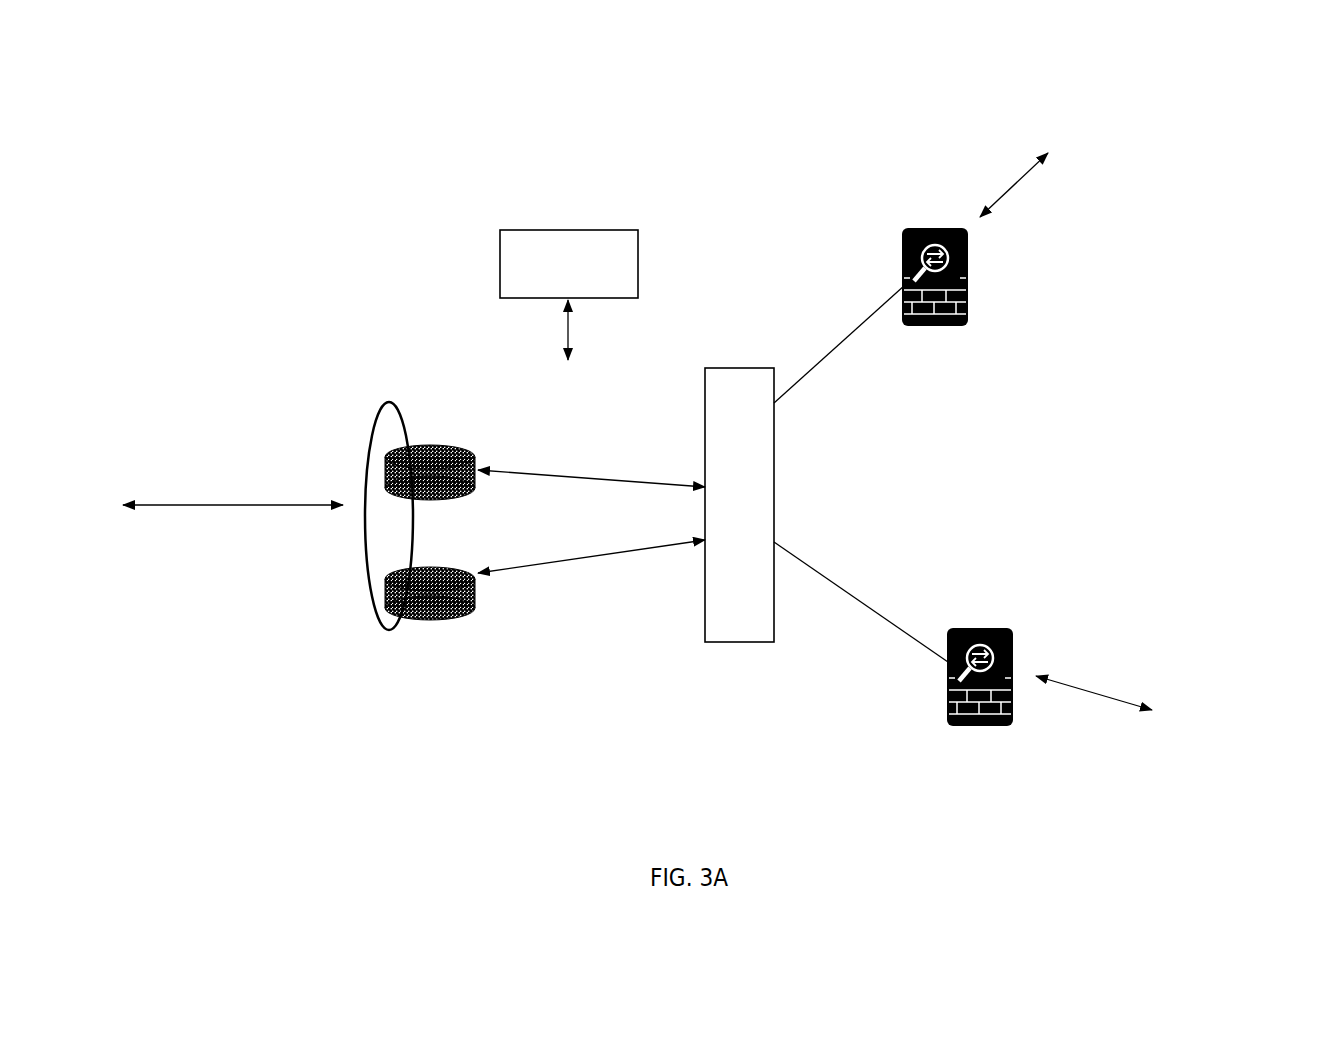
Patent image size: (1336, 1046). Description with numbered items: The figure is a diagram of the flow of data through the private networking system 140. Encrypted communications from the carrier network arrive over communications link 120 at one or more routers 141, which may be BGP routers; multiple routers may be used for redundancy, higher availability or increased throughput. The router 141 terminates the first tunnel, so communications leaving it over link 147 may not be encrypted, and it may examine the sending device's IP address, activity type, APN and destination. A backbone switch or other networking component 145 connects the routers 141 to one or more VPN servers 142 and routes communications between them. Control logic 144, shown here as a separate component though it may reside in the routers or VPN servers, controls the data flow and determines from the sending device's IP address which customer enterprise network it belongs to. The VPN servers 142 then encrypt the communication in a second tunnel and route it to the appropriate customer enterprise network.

The communications link 120 is at (260, 505).
The private networking system 140 is at (388, 178).
The routers 141 is at (465, 620).
The VPN servers 142 is at (948, 330).
The control logic 144 is at (553, 228).
The backbone switch or other networking component 145 is at (740, 642).
The link 147 is at (543, 562).